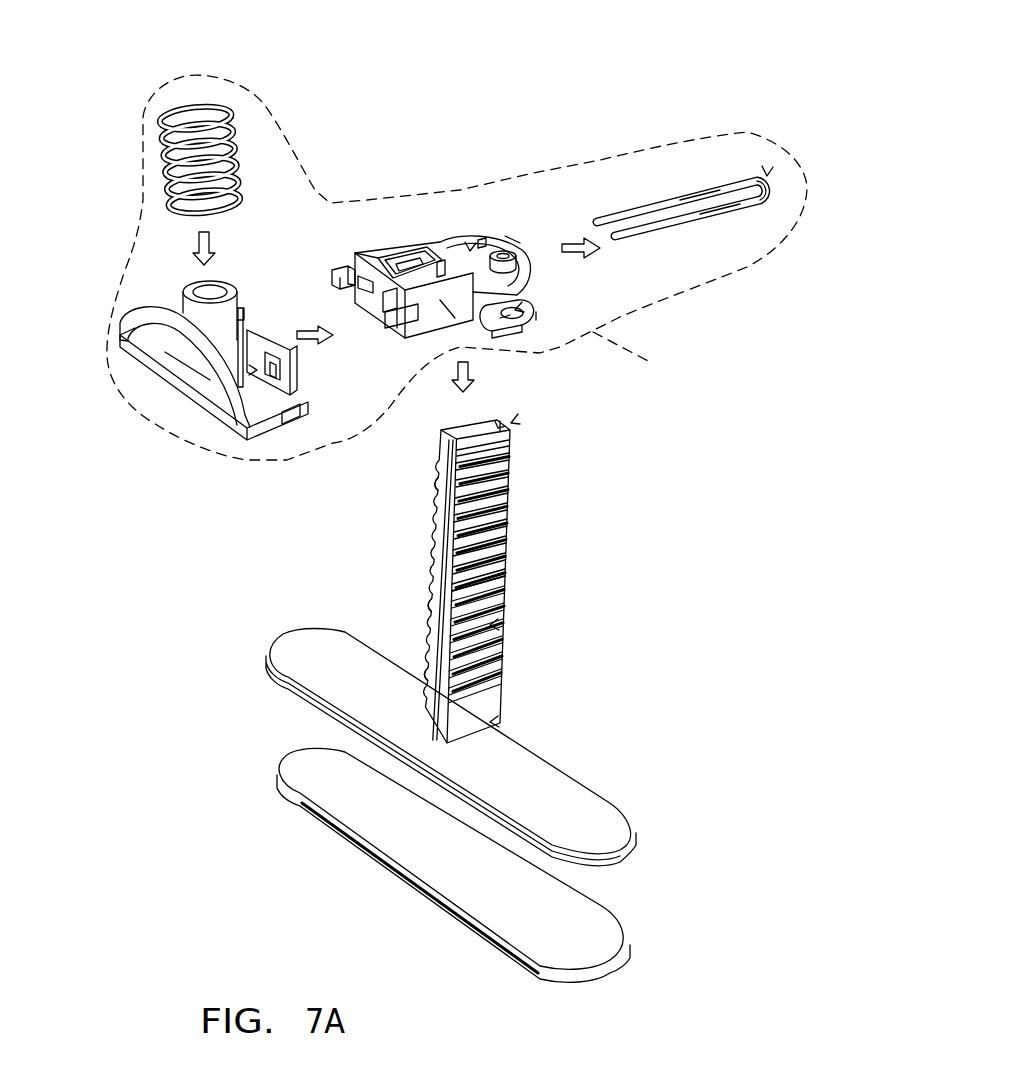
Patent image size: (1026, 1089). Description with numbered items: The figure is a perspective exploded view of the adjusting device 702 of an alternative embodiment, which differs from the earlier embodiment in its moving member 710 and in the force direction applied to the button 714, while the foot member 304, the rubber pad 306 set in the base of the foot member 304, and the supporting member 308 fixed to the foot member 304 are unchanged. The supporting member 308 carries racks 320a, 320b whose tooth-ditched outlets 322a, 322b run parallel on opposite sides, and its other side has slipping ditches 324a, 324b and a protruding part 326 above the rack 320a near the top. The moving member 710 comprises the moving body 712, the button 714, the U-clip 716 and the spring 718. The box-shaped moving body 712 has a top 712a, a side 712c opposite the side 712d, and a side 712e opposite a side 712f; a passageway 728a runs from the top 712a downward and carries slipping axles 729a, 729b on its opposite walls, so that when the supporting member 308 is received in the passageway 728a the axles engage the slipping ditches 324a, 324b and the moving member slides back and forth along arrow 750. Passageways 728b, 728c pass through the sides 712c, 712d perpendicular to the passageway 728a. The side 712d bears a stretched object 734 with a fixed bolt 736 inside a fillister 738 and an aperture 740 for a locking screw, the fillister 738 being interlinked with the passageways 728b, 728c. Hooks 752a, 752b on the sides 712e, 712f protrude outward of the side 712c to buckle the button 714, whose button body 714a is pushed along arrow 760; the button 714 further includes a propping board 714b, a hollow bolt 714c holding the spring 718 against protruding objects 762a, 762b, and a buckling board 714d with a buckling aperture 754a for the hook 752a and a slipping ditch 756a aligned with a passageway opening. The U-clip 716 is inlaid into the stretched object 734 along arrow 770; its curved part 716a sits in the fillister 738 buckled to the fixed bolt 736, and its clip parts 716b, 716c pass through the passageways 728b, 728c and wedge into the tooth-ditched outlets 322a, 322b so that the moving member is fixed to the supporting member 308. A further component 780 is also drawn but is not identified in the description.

The adjusting device 702 is at (722, 34).
The moving member 710 is at (645, 352).
The spring 718 is at (183, 110).
The button 714 is at (120, 337).
The button body 714a is at (195, 347).
The propping board 714b is at (245, 378).
The hollow bolt 714c is at (120, 323).
The buckling board 714d is at (290, 416).
The spring seat post 780 is at (200, 290).
The protruding object 762b is at (242, 308).
The protruding object 762a is at (244, 322).
The arrow 760 is at (312, 350).
The buckling aperture 754a is at (262, 392).
The slipping ditch 756a is at (257, 370).
The moving body 712 is at (412, 260).
The top 712a is at (440, 258).
The side 712c is at (380, 255).
The side 712d is at (505, 318).
The side 712e is at (453, 313).
The side 712f is at (400, 264).
The passageway 728a is at (427, 258).
The passageway 728b is at (383, 305).
The passageway 728c is at (358, 283).
The slipping axle 729a is at (470, 248).
The slipping axle 729b is at (343, 268).
The hook 752a is at (390, 328).
The hook 752b is at (340, 272).
The stretched object 734 is at (510, 250).
The fixed bolt 736 is at (513, 238).
The fillister 738 is at (483, 240).
The aperture 740 is at (515, 310).
The arrow 770 is at (600, 249).
The arrow 750 is at (452, 378).
The U-clip 716 is at (767, 175).
The curved part 716a is at (773, 190).
The clip part 716b is at (722, 210).
The clip part 716c is at (703, 195).
The supporting member 308 is at (490, 722).
The slipping ditch 324a is at (511, 423).
The slipping ditch 324b is at (443, 521).
The protruding part 326 is at (512, 447).
The rack 320a is at (505, 588).
The rack 320b is at (433, 672).
The tooth-ditched outlet 322a is at (490, 625).
The tooth-ditched outlet 322b is at (433, 603).
The foot member 304 is at (582, 818).
The rubber pad 306 is at (572, 932).